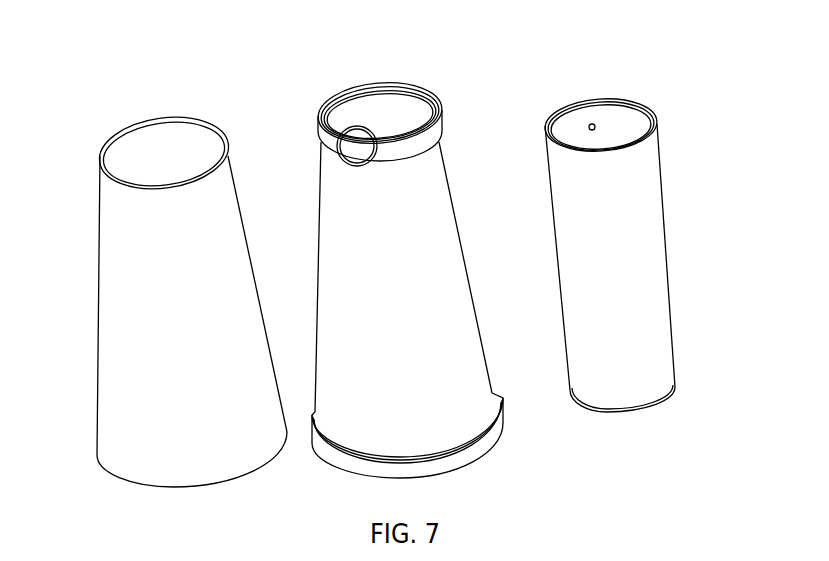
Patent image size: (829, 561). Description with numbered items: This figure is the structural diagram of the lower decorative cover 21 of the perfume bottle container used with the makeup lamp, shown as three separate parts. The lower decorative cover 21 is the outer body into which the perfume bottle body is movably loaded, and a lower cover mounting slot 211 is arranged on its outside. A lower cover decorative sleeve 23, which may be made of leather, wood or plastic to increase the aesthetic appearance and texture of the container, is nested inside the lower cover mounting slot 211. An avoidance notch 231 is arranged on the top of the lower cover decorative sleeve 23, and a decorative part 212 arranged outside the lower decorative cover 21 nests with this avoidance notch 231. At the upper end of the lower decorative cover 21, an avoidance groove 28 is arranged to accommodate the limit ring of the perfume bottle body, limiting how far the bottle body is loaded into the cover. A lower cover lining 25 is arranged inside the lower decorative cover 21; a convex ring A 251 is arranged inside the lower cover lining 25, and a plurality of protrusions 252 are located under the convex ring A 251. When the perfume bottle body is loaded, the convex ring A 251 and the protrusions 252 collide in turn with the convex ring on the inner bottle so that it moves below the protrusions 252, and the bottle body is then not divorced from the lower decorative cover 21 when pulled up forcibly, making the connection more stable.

The lower decorative cover 21 is at (369, 249).
The lower cover mounting slot 211 is at (421, 325).
The decorative part 212 is at (357, 147).
The lower cover decorative sleeve 23 is at (160, 298).
The avoidance notch 231 is at (140, 187).
The lower cover lining 25 is at (637, 227).
The convex ring A 251 is at (603, 104).
The protrusions 252 is at (599, 129).
The avoidance groove 28 is at (412, 92).